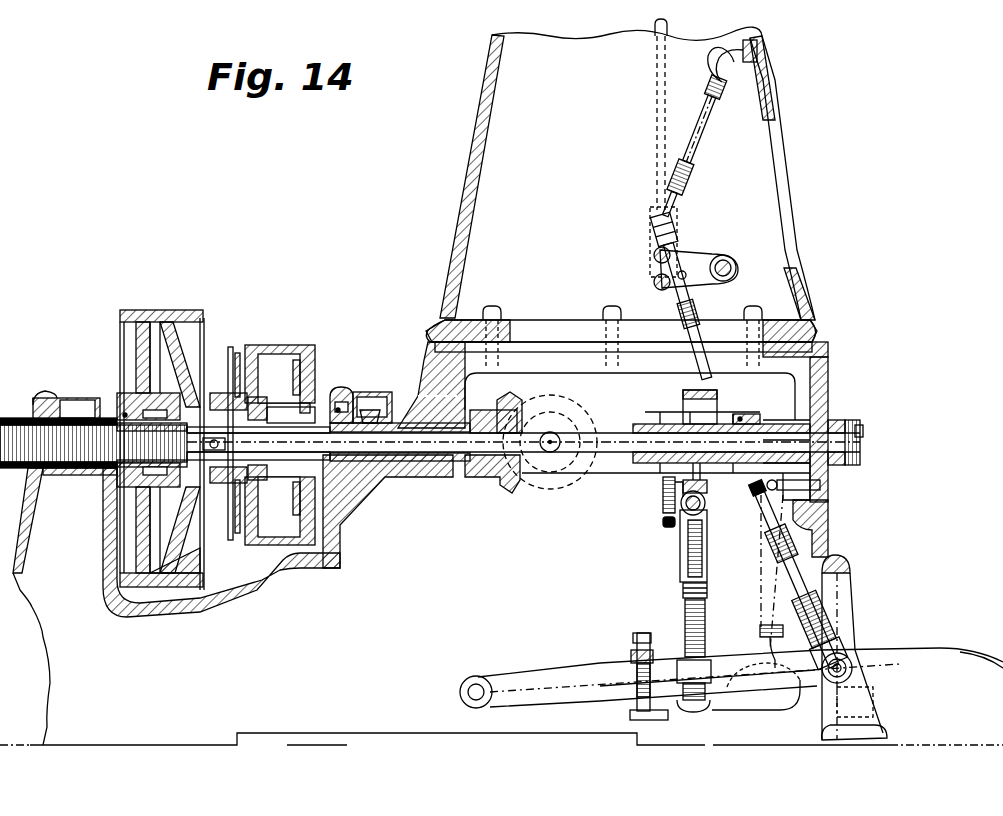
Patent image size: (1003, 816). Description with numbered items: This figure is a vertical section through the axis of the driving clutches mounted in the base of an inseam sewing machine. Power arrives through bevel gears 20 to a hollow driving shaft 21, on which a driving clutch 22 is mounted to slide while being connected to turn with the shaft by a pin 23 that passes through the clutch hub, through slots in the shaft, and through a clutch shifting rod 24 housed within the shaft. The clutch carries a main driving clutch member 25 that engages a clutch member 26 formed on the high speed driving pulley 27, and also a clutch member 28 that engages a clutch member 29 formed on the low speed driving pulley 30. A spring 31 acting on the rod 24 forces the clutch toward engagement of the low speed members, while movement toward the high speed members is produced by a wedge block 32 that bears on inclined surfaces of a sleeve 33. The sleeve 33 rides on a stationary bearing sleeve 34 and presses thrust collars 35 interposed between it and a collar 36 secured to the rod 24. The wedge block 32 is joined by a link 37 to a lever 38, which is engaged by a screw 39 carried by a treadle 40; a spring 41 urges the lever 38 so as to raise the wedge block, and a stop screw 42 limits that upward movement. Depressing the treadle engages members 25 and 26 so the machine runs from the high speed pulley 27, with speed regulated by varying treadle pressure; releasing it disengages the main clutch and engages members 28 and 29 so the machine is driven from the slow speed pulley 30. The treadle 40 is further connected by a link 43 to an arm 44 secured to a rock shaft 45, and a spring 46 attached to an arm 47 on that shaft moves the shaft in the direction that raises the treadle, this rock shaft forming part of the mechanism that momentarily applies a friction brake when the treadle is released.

The bevel gears 20 is at (578, 412).
The hollow driving shaft 21 is at (545, 470).
The driving clutch 22 is at (231, 360).
The pin 23 is at (213, 453).
The clutch shifting rod 24 is at (398, 420).
The main driving clutch member 25 is at (247, 356).
The clutch member 26 is at (295, 352).
The high speed driving pulley 27 is at (340, 386).
The clutch member 28 is at (205, 340).
The clutch member 29 is at (180, 325).
The low speed driving pulley 30 is at (135, 310).
The spring 31 is at (74, 468).
The wedge block 32 is at (712, 408).
The sleeve 33 is at (701, 474).
The stationary bearing sleeve 34 is at (647, 470).
The thrust collars 35 is at (752, 420).
The collar 36 is at (800, 418).
The link 37 is at (680, 566).
The lever 38 is at (775, 708).
The screw 39 is at (650, 645).
The treadle 40 is at (905, 655).
The spring 41 is at (765, 549).
The stop screw 42 is at (663, 517).
The link 43 is at (840, 566).
The arm 44 is at (712, 258).
The rock shaft 45 is at (737, 268).
The spring 46 is at (690, 198).
The arm 47 is at (690, 255).